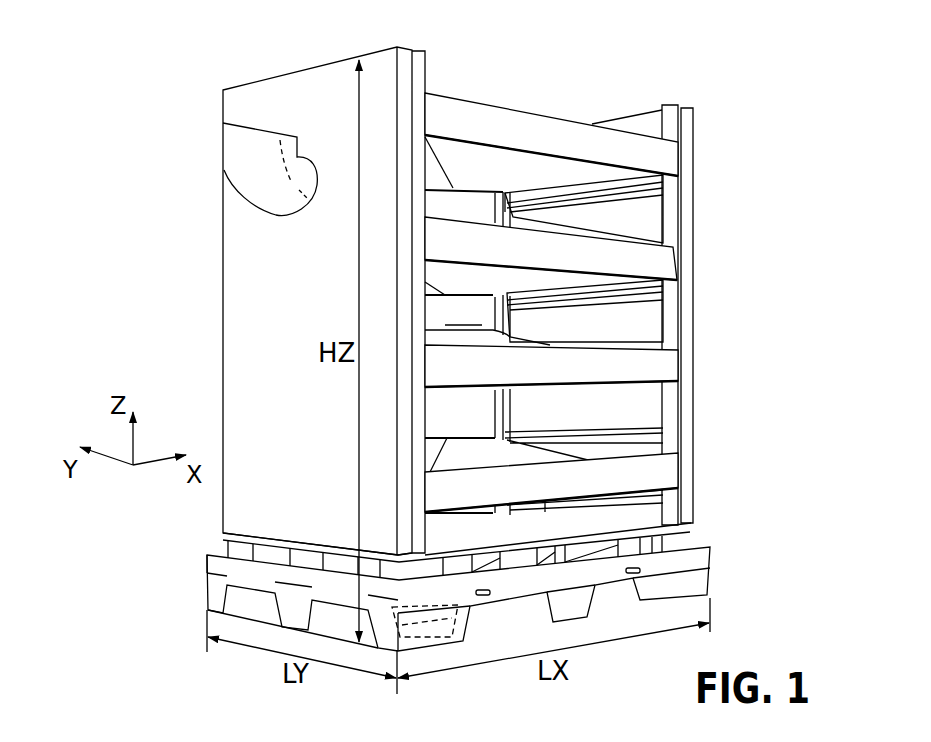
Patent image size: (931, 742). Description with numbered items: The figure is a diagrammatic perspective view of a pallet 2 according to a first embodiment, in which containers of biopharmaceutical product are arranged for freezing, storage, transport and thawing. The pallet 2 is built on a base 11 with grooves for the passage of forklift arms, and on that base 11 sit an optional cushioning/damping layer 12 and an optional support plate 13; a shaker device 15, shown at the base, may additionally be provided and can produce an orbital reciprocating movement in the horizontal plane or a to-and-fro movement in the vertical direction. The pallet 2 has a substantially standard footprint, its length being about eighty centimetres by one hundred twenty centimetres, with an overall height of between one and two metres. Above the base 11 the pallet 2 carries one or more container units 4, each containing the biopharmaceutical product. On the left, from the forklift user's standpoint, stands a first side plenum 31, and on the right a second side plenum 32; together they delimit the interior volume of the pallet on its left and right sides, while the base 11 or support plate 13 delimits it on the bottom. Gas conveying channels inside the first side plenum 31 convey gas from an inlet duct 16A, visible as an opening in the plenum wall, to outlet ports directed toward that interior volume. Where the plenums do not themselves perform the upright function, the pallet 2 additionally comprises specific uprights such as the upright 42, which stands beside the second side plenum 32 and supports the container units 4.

The pallet 2 is at (746, 139).
The container unit 4 is at (670, 161).
The upright 42 is at (670, 212).
The second side plenum 32 is at (695, 292).
The first side plenum 31 is at (222, 267).
The inlet duct 16A is at (240, 170).
The support plate 13 is at (224, 532).
The cushioning/damping layer 12 is at (697, 532).
The base 11 is at (715, 569).
The shaker device 15 is at (437, 622).